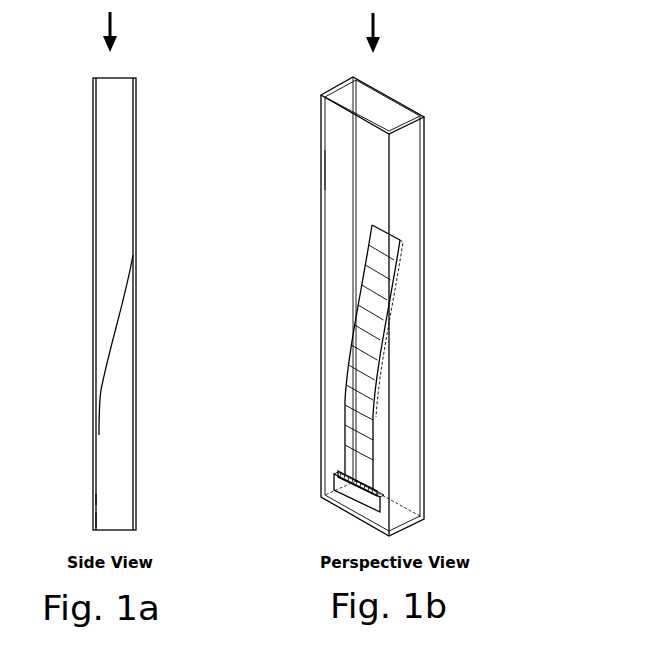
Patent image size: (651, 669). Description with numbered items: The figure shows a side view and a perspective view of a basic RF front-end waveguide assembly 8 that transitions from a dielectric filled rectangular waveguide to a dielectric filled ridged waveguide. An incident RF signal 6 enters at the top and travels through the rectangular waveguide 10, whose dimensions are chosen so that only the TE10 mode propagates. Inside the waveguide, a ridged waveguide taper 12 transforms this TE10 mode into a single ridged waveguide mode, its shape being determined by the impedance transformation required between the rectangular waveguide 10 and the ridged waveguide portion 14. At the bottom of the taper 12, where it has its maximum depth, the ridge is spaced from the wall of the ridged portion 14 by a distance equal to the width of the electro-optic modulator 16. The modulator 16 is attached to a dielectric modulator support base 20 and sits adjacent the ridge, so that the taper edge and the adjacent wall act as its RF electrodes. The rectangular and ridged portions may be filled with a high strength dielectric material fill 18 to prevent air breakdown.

In FIG. 1A, the incident RF signal 6 is at (113, 22).
In FIG. 1B, the incident RF signal 6 is at (376, 22).
In FIG. 1A, the waveguide assembly 8 is at (84, 225).
In FIG. 1B, the rectangular waveguide 10 is at (432, 136).
In FIG. 1B, the ridged waveguide taper 12 is at (408, 348).
In FIG. 1B, the ridged waveguide portion 14 is at (378, 452).
In FIG. 1A, the electro-optic modulator 16 is at (97, 500).
In FIG. 1B, the electro-optic modulator 16 is at (380, 484).
In FIG. 1B, the dielectric material fill 18 is at (331, 166).
In FIG. 1A, the modulator support base 20 is at (96, 517).
In FIG. 1B, the modulator support base 20 is at (327, 489).